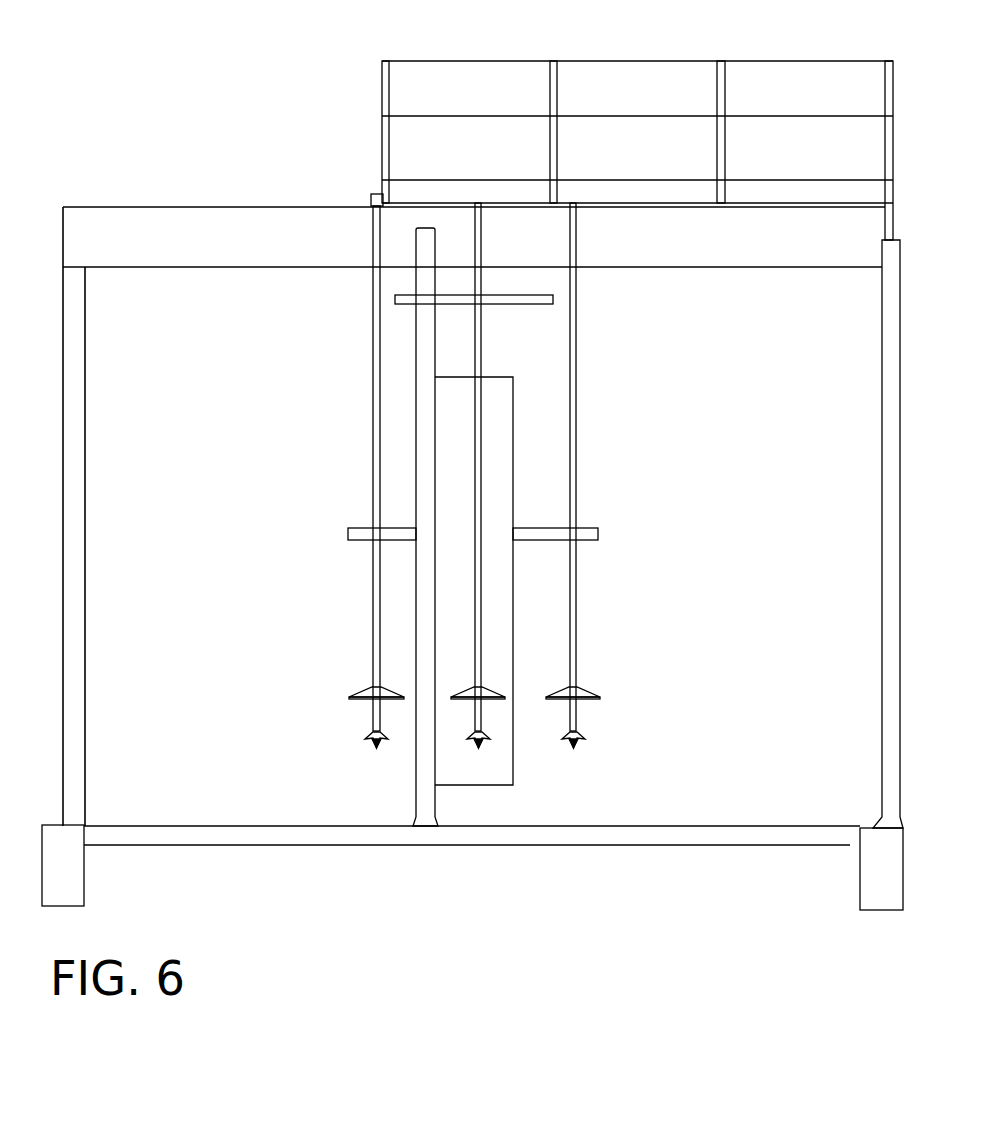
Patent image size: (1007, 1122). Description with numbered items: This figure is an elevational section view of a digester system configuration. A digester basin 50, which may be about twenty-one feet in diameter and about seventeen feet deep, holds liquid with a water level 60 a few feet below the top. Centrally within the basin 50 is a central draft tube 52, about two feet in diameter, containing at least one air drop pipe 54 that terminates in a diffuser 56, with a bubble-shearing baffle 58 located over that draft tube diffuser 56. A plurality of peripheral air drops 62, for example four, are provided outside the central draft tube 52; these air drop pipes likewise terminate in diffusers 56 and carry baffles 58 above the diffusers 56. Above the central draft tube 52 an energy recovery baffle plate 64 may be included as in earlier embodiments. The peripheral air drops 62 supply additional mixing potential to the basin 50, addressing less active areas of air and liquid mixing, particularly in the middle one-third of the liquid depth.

The digester basin 50 is at (902, 755).
The central draft tube 52 is at (513, 572).
The air drop pipe 54 is at (481, 338).
The diffuser 56 is at (371, 739).
The bubble-shearing baffle 58 is at (381, 688).
The water level 60 is at (258, 267).
The air drops 62 is at (373, 447).
The energy recovery baffle plate 64 is at (410, 303).